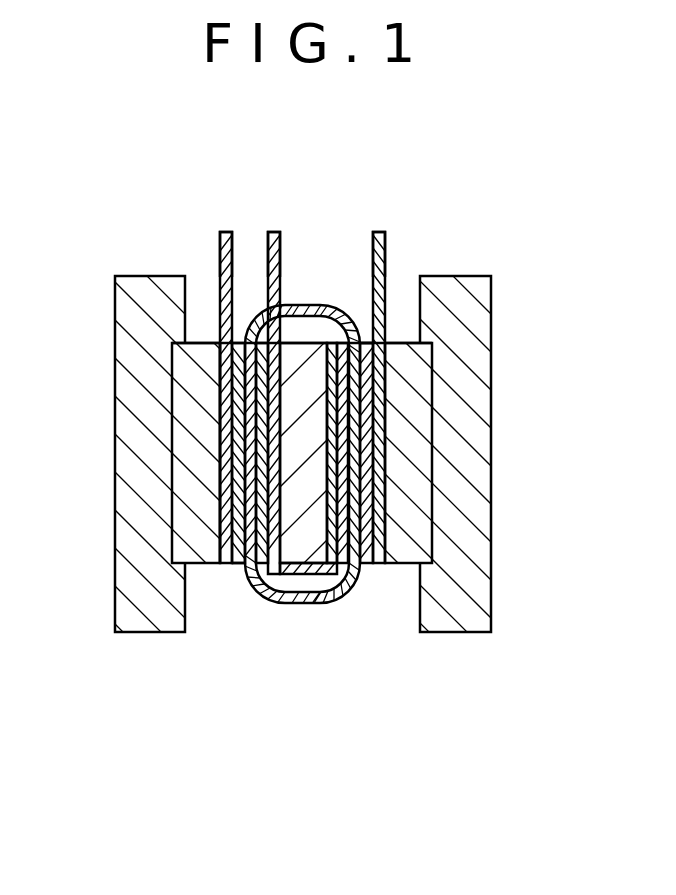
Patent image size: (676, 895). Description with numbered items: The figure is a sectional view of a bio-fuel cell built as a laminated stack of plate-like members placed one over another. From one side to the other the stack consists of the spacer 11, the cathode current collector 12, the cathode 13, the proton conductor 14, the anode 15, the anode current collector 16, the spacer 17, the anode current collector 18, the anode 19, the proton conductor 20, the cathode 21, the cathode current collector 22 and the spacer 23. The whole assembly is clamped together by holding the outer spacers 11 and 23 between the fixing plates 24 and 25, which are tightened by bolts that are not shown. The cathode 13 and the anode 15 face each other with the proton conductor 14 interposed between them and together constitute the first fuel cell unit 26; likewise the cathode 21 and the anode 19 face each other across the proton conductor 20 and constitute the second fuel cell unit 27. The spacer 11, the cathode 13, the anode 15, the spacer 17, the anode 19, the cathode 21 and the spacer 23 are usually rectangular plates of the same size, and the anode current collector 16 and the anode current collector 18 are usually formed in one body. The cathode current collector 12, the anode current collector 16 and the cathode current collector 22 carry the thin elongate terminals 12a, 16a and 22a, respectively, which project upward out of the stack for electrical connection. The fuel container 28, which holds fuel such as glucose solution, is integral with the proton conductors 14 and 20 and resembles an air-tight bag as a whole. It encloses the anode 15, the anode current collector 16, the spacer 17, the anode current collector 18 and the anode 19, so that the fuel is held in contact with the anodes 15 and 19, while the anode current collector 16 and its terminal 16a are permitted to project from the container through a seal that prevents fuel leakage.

The spacer 11 is at (203, 555).
The cathode current collector 12 is at (227, 557).
The terminal 12a is at (224, 246).
The cathode 13 is at (237, 557).
The proton conductor 14 is at (226, 431).
The anode 15 is at (262, 516).
The anode current collector 16 is at (273, 397).
The terminal 16a is at (273, 232).
The spacer 17 is at (307, 560).
The anode current collector 18 is at (332, 426).
The anode 19 is at (345, 525).
The proton conductor 20 is at (355, 463).
The cathode 21 is at (363, 557).
The cathode current collector 22 is at (372, 557).
The terminal 22a is at (382, 246).
The spacer 23 is at (402, 557).
The fixing plate 24 is at (147, 306).
The fixing plate 25 is at (458, 299).
The first fuel cell unit 26 is at (238, 474).
The second fuel cell unit 27 is at (367, 513).
The fuel container 28 is at (320, 305).